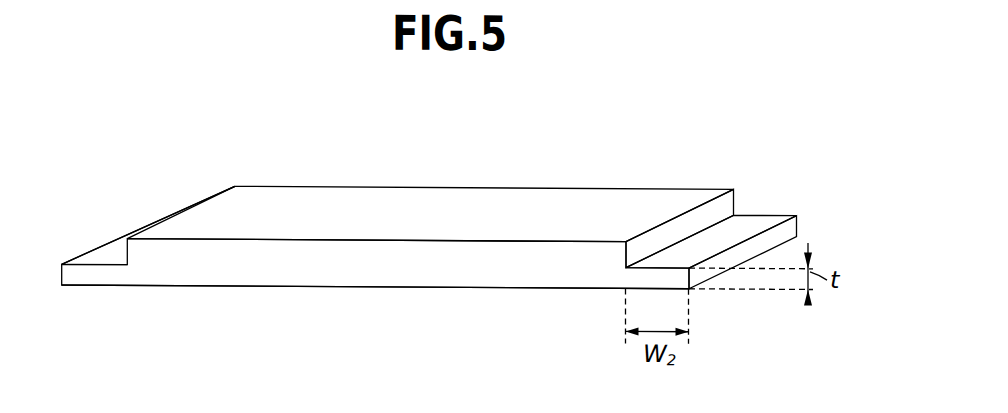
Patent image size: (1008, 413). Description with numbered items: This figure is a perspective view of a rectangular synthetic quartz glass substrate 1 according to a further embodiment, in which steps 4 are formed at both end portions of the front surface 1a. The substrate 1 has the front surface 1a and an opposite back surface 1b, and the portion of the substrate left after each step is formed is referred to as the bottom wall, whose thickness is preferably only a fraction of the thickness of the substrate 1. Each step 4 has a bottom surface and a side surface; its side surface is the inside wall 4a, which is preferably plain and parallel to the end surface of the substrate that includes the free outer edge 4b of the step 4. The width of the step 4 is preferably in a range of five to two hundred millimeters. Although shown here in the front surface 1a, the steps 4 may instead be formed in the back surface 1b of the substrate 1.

The synthetic quartz glass substrate 1 is at (398, 240).
The front surface 1a is at (480, 202).
The back surface 1b is at (518, 285).
The step 4 is at (429, 216).
The inside wall 4a is at (645, 241).
The free outer edge 4b is at (717, 253).